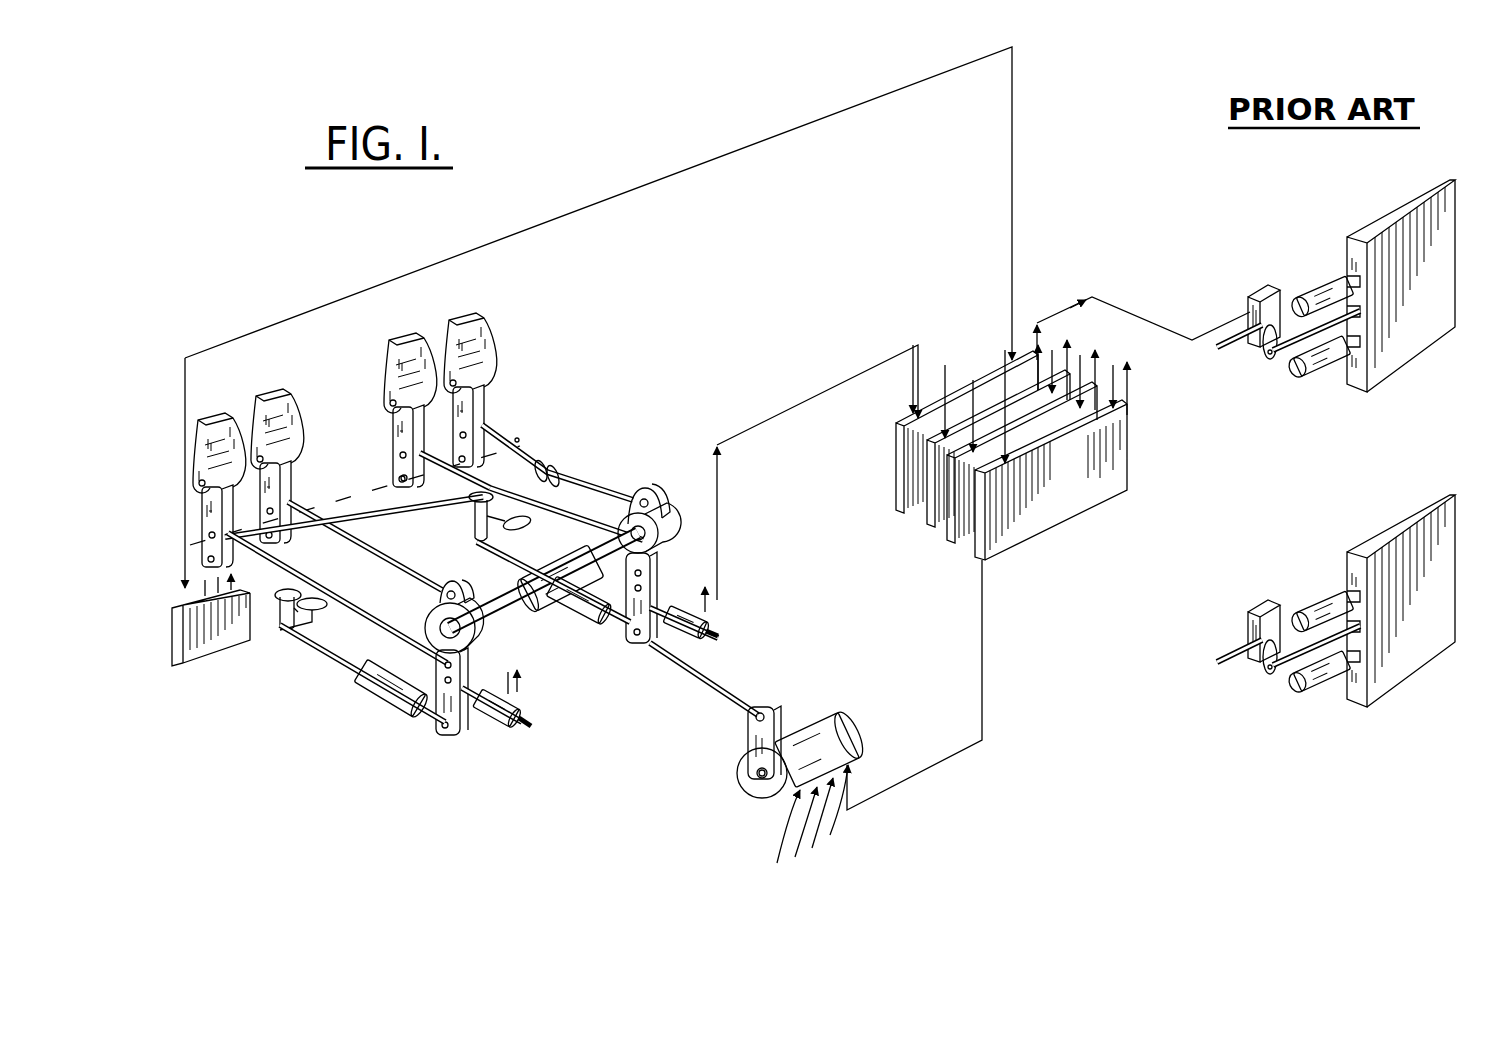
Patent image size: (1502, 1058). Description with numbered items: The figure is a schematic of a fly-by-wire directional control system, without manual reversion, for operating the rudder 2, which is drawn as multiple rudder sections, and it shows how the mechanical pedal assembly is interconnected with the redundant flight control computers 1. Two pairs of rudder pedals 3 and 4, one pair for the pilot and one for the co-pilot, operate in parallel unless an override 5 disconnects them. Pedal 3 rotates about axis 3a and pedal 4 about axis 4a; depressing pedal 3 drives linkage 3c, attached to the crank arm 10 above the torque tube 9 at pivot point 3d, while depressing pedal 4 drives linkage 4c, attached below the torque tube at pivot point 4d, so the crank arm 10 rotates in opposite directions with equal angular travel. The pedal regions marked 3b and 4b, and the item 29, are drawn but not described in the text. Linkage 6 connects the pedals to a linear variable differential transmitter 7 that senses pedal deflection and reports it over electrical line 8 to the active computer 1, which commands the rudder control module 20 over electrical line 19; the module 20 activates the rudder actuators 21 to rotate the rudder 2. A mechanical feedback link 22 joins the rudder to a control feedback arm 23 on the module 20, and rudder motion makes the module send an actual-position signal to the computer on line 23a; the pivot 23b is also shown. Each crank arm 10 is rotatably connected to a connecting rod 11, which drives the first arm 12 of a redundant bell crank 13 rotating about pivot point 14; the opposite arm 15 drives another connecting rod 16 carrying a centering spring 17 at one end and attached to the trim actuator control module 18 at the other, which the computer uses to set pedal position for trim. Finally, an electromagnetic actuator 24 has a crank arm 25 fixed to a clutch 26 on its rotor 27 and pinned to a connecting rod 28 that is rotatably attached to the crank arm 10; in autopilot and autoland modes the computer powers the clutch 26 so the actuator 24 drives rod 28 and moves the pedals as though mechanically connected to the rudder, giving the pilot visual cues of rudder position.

The flight control computer 1 is at (1055, 528).
The rudder 2 is at (1457, 252).
The rudder pedal 3 is at (204, 412).
The axis 3a is at (393, 478).
The lever head 3b is at (385, 430).
The linkage 3c is at (460, 498).
The pivot point 3d is at (660, 560).
The rudder pedal 4 is at (278, 382).
The axis 4a is at (520, 432).
The lever head 4b is at (495, 396).
The linkage 4c is at (590, 478).
The pivot point 4d is at (655, 488).
The override 5 is at (538, 612).
The linkage 6 is at (475, 660).
The linear variable differential transmitter 7 is at (532, 712).
The electrical line 8 is at (718, 565).
The torque tube 9 is at (524, 617).
The crank arm 10 is at (652, 620).
The connecting rod 11 is at (512, 562).
The first arm 12 is at (478, 508).
The bell crank 13 is at (510, 530).
The pivot point 14 is at (528, 508).
The opposite arm 15 is at (505, 500).
The connecting rod 16 is at (392, 530).
The centering spring 17 is at (555, 480).
The trim actuator control module 18 is at (212, 660).
The electrical line 19 is at (1216, 326).
The rudder control module 20 is at (1256, 292).
The rudder actuator 21 is at (1312, 290).
The mechanical feedback link 22 is at (1278, 360).
The control feedback arm 23 is at (1266, 676).
The line 23a is at (1238, 348).
The pivot 23b is at (1266, 362).
The electromagnetic actuator 24 is at (838, 712).
The crank arm 25 is at (790, 702).
The clutch 26 is at (786, 790).
The rotor 27 is at (740, 777).
The connecting rod 28 is at (712, 676).
The guide plate 29 is at (984, 732).